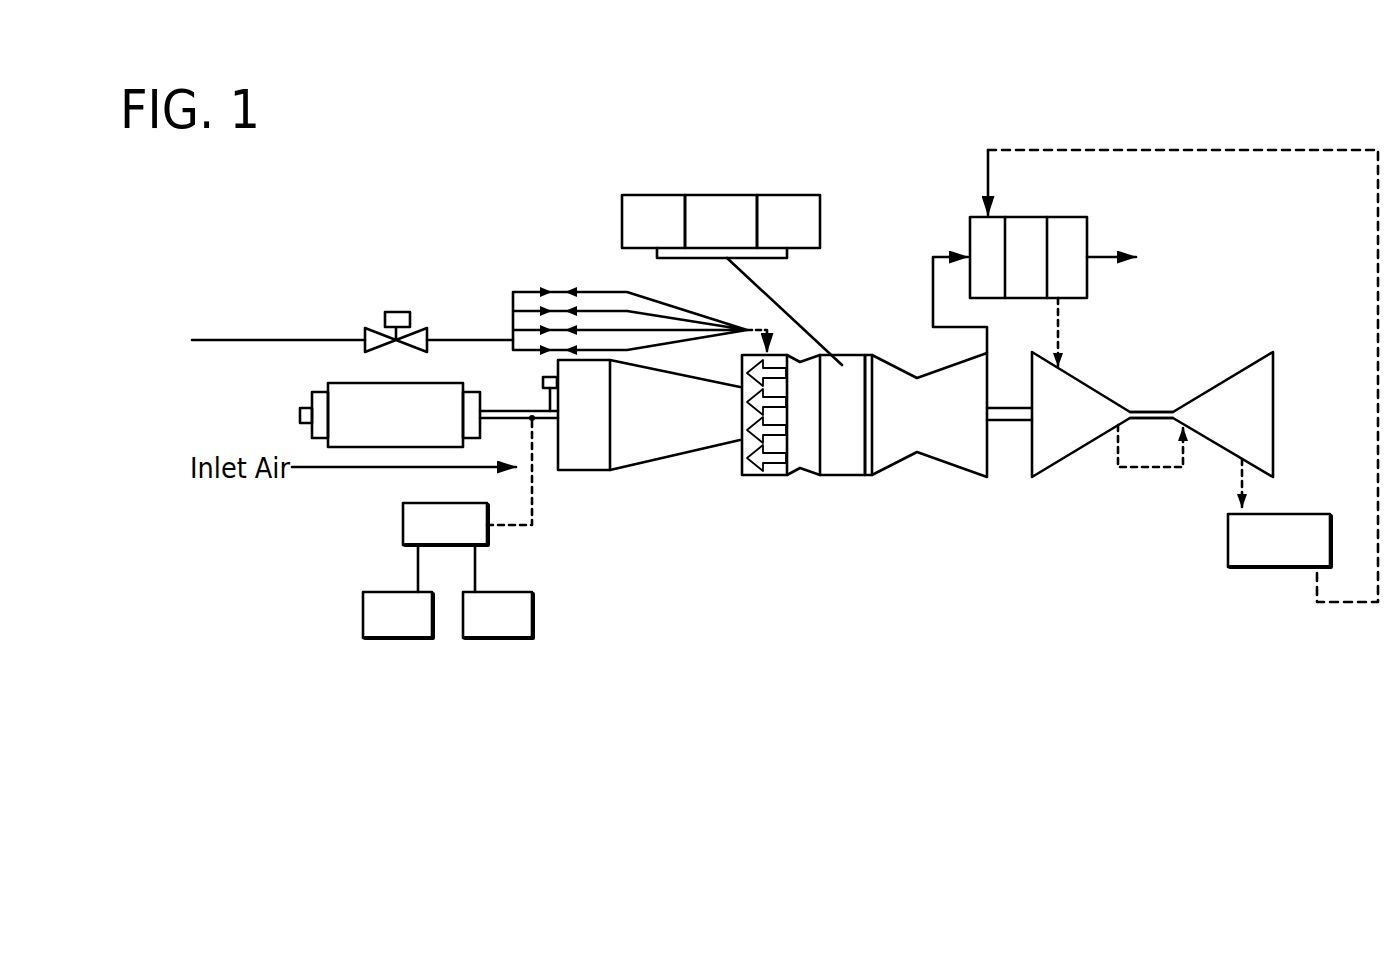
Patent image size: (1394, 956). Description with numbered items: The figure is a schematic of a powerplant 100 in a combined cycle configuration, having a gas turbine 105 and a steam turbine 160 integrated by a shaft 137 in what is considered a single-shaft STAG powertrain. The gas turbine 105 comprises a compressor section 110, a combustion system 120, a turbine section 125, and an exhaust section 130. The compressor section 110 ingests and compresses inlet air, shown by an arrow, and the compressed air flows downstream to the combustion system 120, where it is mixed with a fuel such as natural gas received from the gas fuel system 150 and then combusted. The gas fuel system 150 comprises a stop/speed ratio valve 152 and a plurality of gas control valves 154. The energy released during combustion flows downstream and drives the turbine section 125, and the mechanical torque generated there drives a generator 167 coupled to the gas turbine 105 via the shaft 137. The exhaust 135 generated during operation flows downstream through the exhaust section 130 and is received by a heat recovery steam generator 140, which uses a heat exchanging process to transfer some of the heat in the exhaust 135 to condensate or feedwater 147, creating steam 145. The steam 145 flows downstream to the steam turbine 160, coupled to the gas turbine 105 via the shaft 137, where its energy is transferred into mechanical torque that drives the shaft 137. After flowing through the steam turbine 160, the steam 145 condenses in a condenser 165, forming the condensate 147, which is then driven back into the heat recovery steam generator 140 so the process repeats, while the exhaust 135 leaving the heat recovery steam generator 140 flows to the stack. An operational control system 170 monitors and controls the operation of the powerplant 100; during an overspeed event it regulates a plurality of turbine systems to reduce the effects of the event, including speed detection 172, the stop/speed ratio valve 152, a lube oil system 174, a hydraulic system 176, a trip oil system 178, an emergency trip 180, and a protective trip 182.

The powerplant 100 is at (130, 387).
The gas turbine 105 is at (740, 517).
The compressor section 110 is at (622, 484).
The combustion system 120 is at (797, 488).
The turbine section 125 is at (858, 488).
The exhaust section 130 is at (925, 488).
The exhaust 135 is at (933, 297).
The shaft 137 is at (512, 410).
The heat recovery steam generator (HRSG) 140 is at (1044, 270).
The steam 145 is at (1062, 320).
The condensate or feedwater 147 is at (1035, 150).
The gas fuel system 150 is at (250, 323).
The stop/speed ratio valve 152 is at (383, 314).
The gas control valves 154 is at (538, 290).
The steam turbine 160 is at (1072, 486).
The condenser 165 is at (1302, 557).
The generator 167 is at (340, 383).
The operational control system 170 is at (468, 538).
The speed detection 172 is at (549, 392).
The lube oil system 174 is at (653, 221).
The hydraulic system 176 is at (749, 280).
The trip oil system 178 is at (788, 221).
The emergency trip 180 is at (398, 615).
The protective trip 182 is at (498, 615).